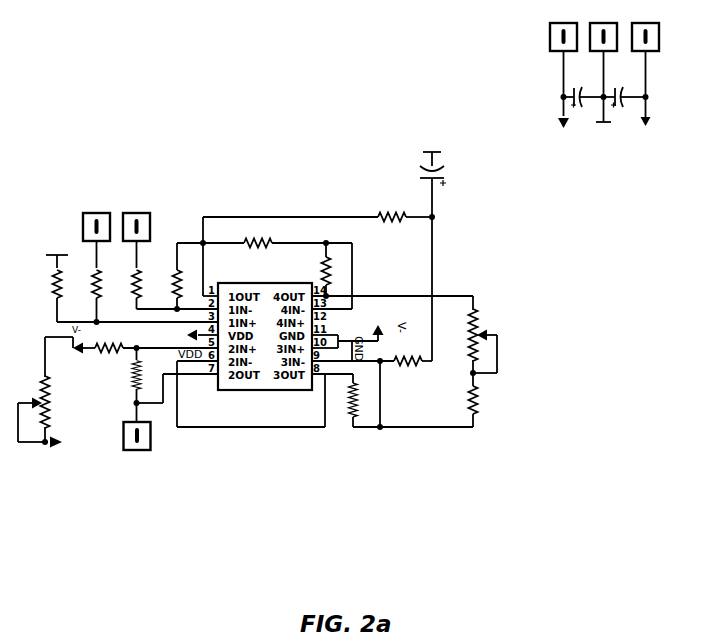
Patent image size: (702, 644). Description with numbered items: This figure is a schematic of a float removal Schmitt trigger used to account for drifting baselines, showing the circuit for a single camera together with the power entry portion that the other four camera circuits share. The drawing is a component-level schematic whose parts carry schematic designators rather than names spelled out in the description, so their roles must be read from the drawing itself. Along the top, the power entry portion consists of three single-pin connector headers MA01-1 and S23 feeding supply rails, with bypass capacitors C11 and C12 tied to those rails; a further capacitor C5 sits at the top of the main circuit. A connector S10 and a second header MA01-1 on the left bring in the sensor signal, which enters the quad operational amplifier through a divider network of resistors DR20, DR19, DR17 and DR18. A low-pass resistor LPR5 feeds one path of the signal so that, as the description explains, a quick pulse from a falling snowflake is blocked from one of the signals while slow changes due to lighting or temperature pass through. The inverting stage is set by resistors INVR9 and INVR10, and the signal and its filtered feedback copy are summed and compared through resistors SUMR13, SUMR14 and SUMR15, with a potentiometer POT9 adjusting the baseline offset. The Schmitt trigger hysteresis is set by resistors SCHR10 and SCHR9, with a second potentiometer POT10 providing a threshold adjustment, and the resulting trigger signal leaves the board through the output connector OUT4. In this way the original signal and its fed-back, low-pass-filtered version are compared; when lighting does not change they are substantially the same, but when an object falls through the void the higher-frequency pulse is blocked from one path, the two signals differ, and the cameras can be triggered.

The single-pin connector header MA01-1 is at (329, 236).
The connector S23 is at (645, 74).
The 10uF capacitor C11 is at (583, 85).
The 10uF capacitor C12 is at (618, 80).
The 10uF capacitor C5 is at (421, 177).
The 10K resistor LPR5 is at (319, 219).
The 10K resistor INVR9 is at (264, 244).
The 10K resistor INVR10 is at (325, 269).
The 10K resistor DR17 is at (168, 288).
The 10K resistor DR18 is at (175, 277).
The 10K resistor DR19 is at (96, 296).
The 10K resistor DR20 is at (55, 281).
The connector S10 is at (143, 240).
The 2K resistor SCHR10 is at (145, 352).
The 100K resistor SCHR9 is at (136, 385).
The output connector OUT4 is at (130, 430).
The 10K potentiometer POT10 is at (51, 392).
The 50K potentiometer POT9 is at (465, 336).
The 10K resistor SUMR13 is at (372, 365).
The 10K resistor SUMR14 is at (473, 400).
The 1M resistor SUMR15 is at (341, 401).